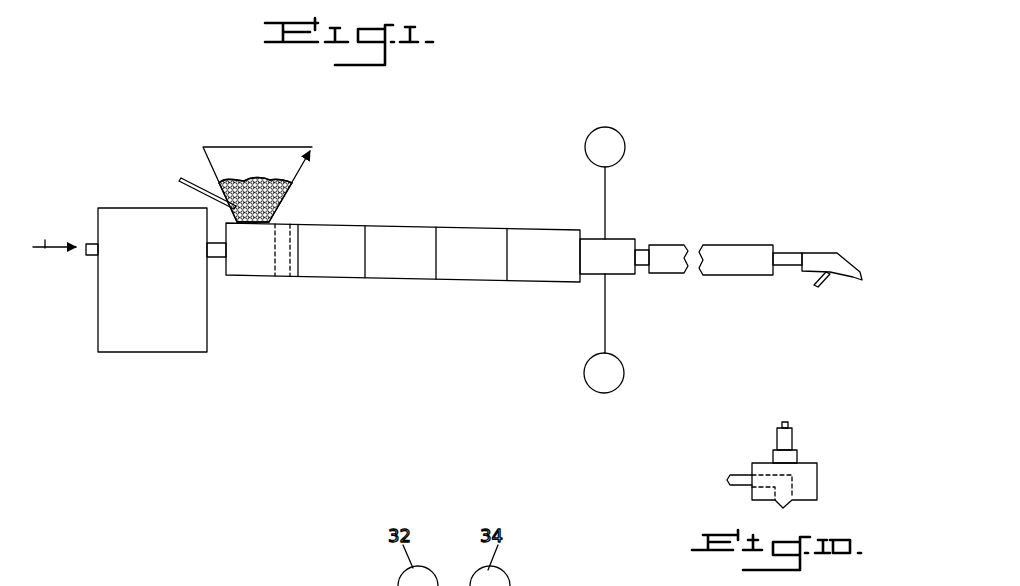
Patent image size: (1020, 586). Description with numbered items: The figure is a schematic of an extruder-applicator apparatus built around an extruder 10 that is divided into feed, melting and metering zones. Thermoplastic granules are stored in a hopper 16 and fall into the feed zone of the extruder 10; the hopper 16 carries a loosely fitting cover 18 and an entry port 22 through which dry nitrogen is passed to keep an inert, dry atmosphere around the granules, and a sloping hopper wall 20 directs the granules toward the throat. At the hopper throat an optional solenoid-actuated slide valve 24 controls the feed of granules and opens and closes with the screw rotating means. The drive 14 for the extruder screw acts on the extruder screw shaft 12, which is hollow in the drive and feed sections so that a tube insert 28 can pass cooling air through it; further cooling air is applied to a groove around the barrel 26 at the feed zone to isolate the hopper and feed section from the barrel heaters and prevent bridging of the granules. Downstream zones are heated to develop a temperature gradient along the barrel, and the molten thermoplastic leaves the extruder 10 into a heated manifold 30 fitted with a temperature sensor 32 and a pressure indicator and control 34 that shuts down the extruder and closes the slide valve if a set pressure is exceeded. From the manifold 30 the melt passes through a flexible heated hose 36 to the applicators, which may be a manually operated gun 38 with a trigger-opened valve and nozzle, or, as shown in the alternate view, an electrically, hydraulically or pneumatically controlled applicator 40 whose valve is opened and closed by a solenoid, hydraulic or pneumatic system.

In FIG. 1, the extruder 10 is at (423, 228).
In FIG. 1, the extruder screw shaft 12 is at (86, 243).
In FIG. 1, the drive 14 is at (158, 296).
In FIG. 1, the hopper 16 is at (267, 172).
In FIG. 1, the cover 18 is at (277, 147).
In FIG. 1, the hopper wall 20 is at (288, 192).
In FIG. 1, the entry port 22 is at (183, 152).
In FIG. 1, the slide valve 24 is at (293, 218).
In FIG. 1, the barrel 26 is at (300, 218).
In FIG. 1, the tube insert 28 is at (50, 231).
In FIG. 1, the manifold 30 is at (620, 238).
In FIG. 1, the temperature sensor 32 is at (608, 126).
In FIG. 1, the pressure indicator and control 34 is at (603, 393).
In FIG. 1, the flexible heated hose 36 is at (723, 245).
In FIG. 1, the manually operated gun 38 is at (827, 252).
In FIG. 1A, the controlled applicator 40 is at (807, 463).